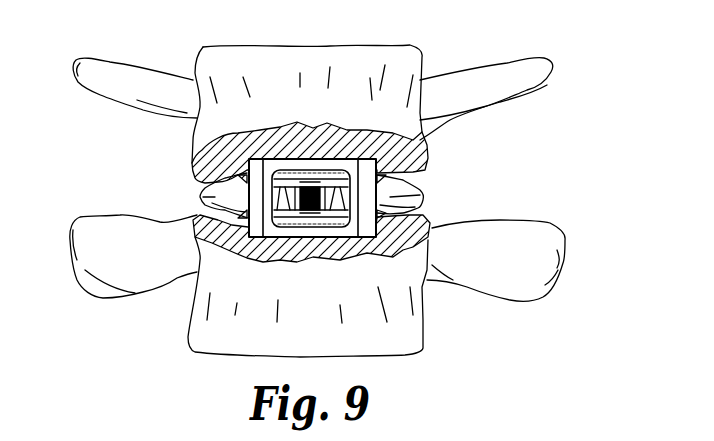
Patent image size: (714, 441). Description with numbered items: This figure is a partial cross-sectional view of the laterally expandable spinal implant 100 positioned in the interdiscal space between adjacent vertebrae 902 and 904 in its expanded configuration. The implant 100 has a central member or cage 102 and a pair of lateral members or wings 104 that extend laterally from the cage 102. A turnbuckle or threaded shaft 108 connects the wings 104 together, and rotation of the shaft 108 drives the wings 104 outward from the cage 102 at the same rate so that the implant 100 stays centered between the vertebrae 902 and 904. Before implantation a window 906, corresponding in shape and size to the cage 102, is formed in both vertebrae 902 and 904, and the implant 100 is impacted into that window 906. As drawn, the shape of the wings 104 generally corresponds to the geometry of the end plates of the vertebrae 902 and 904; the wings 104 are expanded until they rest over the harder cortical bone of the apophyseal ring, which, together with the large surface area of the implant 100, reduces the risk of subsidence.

The laterally expandable spinal implant 100 is at (344, 123).
The central member or cage 102 is at (355, 163).
The lateral members or wings 104 is at (203, 193).
The turnbuckle or threaded shaft 108 is at (307, 170).
The vertebra 902 is at (520, 108).
The vertebra 904 is at (427, 303).
The window 906 is at (237, 137).